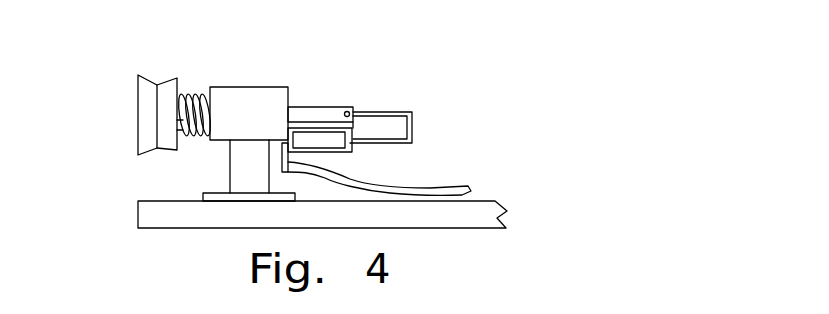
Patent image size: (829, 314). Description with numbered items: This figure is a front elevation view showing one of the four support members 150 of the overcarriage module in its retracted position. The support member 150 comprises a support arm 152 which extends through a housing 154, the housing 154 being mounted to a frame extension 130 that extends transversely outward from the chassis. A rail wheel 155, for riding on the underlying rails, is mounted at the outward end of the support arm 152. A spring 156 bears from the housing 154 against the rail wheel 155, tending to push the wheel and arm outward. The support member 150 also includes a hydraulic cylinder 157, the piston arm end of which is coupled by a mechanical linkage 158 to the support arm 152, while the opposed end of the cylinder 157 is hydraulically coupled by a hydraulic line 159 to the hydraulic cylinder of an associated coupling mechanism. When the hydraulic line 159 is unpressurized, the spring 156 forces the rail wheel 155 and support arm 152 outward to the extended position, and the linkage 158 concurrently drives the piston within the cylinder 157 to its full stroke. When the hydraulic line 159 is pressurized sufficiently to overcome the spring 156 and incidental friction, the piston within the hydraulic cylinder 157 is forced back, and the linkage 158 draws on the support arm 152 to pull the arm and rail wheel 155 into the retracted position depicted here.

The frame extension 130 is at (138, 219).
The support member 150 is at (403, 70).
The support arm 152 is at (307, 105).
The housing 154 is at (255, 87).
The rail wheel 155 is at (138, 98).
The spring 156 is at (203, 93).
The hydraulic cylinder 157 is at (338, 152).
The mechanical linkage 158 is at (390, 112).
The hydraulic line 159 is at (438, 185).